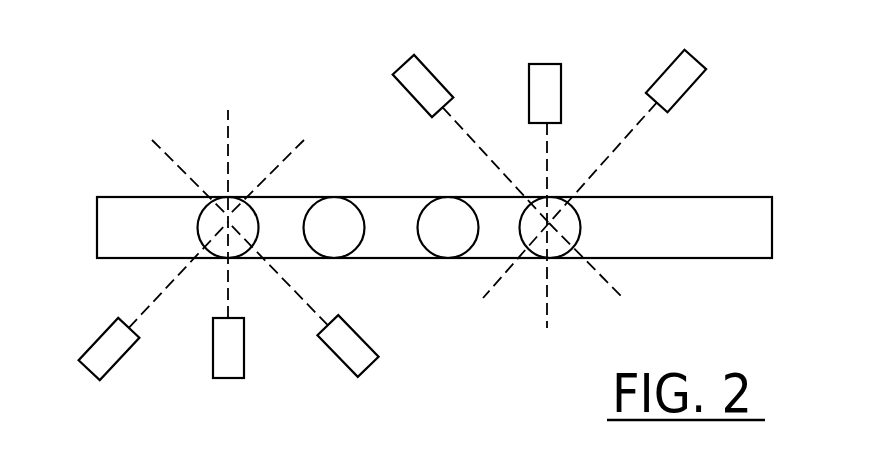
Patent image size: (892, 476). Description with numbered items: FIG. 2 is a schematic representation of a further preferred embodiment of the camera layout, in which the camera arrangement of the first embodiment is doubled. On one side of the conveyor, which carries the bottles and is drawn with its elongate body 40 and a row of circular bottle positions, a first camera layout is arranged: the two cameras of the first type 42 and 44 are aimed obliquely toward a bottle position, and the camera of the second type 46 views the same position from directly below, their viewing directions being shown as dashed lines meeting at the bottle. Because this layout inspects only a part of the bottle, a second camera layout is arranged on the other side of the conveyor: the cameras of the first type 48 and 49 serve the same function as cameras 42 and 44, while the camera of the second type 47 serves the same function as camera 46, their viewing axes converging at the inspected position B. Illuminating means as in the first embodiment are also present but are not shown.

The workpiece plate with bores 40 is at (707, 242).
The camera of the first type 42 is at (107, 345).
The camera of the first type 44 is at (360, 358).
The camera of the second type 46 is at (220, 353).
The camera of the second type 47 is at (547, 73).
The camera of the first type 48 is at (405, 68).
The camera of the first type 49 is at (685, 77).
The bore / measuring point B is at (560, 250).